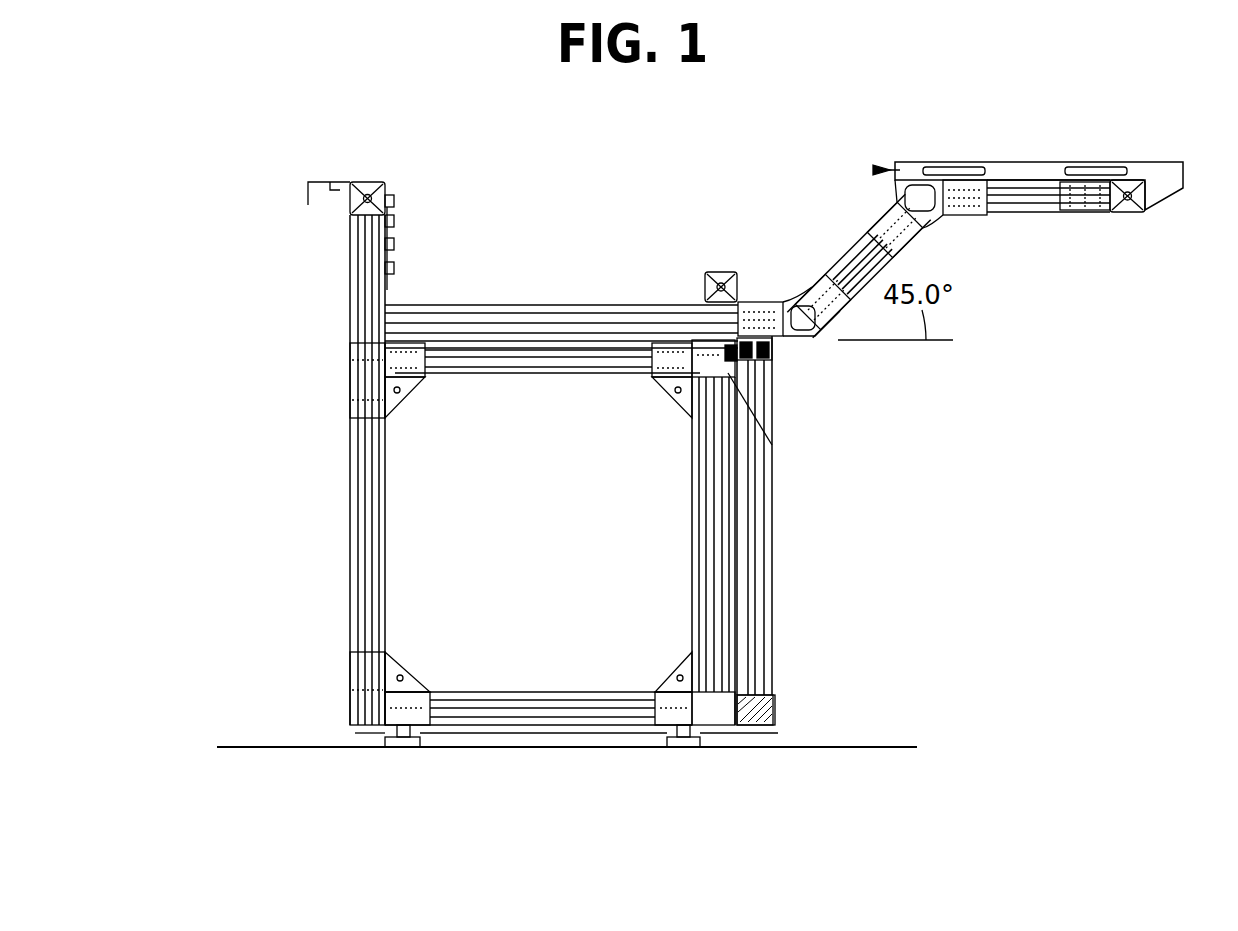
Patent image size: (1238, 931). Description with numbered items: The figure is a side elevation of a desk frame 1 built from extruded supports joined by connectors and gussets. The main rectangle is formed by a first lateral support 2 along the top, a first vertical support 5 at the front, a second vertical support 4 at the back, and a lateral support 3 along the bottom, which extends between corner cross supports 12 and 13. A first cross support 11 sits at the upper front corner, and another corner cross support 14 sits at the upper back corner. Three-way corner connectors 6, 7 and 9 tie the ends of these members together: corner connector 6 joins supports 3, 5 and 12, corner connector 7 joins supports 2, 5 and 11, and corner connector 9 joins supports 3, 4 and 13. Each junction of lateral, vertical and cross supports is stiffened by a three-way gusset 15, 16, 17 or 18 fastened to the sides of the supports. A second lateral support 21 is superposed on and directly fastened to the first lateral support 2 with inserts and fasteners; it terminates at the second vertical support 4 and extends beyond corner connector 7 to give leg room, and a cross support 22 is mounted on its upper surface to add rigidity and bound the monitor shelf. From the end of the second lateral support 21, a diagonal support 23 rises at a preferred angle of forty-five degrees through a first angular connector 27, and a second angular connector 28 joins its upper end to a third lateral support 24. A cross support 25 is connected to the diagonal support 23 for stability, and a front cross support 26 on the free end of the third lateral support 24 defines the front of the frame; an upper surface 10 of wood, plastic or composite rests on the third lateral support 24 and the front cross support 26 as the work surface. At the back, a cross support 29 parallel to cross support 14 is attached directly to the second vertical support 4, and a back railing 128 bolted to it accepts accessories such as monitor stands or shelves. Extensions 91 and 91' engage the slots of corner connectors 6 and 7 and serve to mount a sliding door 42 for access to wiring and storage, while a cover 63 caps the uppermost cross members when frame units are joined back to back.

The desk frame 1 is at (270, 491).
The first lateral support 2 is at (547, 440).
The lateral support 3 is at (538, 785).
The second vertical support 4 is at (350, 545).
The first vertical support 5 is at (672, 551).
The three-way corner connector 6 is at (737, 700).
The three-way corner connector 7 is at (672, 301).
The three-way corner connector 9 is at (413, 764).
The upper surface 10 is at (1028, 146).
The first cross support 11 is at (785, 408).
The corner cross support 12 is at (681, 754).
The corner cross support 13 is at (319, 734).
The corner cross support 14 is at (332, 388).
The three-way gusset 15 is at (435, 398).
The three-way gusset 16 is at (645, 398).
The three-way gusset 17 is at (644, 669).
The three-way gusset 18 is at (437, 669).
The second lateral support 21 is at (561, 288).
The cross support 22 is at (666, 225).
The diagonal support 23 is at (846, 221).
The third lateral support 24 is at (1062, 249).
The cross support 25 is at (846, 237).
The front cross support 26 is at (1166, 231).
The first angular connector 27 is at (848, 307).
The second angular connector 28 is at (985, 237).
The cross support 29 is at (320, 244).
The sliding door 42 is at (740, 563).
The cover 63 is at (295, 154).
The extension 91 is at (796, 755).
The extension 91' is at (807, 365).
The back railing 128 is at (448, 210).